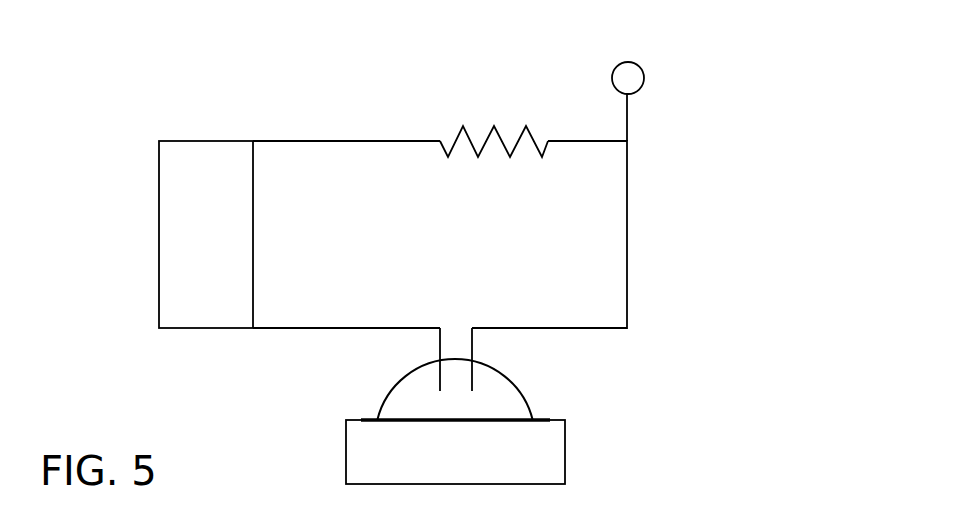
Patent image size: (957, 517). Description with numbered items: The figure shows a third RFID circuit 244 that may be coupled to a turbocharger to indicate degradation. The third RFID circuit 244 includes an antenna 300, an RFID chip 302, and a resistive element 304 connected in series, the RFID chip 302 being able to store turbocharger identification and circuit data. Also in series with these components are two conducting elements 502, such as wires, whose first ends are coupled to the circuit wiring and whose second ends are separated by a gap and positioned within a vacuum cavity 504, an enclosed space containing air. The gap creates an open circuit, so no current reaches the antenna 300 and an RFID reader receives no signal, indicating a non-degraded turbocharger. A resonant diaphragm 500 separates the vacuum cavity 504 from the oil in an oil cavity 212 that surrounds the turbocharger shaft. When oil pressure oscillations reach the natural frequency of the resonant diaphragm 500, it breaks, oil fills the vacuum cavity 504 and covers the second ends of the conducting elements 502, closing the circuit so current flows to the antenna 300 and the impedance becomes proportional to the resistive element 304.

The third RFID circuit 244 is at (723, 48).
The antenna 300 is at (612, 80).
The RFID chip 302 is at (192, 303).
The resistive element 304 is at (494, 125).
The resonant diaphragm 500 is at (455, 423).
The conducting elements 502 is at (472, 347).
The vacuum cavity 504 is at (392, 383).
The oil cavity 212 is at (565, 456).